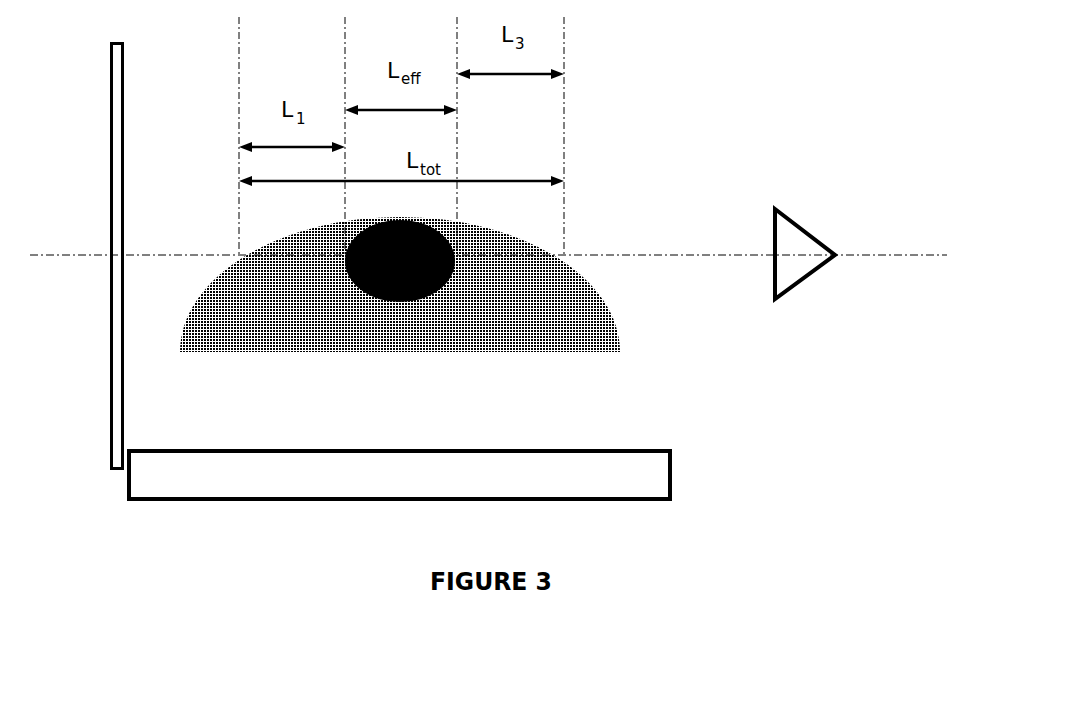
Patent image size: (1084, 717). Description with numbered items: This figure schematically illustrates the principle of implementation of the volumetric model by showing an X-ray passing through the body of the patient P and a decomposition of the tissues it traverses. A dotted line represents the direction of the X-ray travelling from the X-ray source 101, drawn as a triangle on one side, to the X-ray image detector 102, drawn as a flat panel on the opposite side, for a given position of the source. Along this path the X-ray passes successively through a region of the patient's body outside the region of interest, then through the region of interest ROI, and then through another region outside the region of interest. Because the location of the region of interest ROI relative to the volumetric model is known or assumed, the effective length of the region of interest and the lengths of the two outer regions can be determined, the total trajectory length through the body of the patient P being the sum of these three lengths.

The X-ray source 101 is at (807, 232).
The X-ray image detector 102 is at (110, 96).
The patient P is at (606, 247).
The region of interest ROI is at (455, 260).